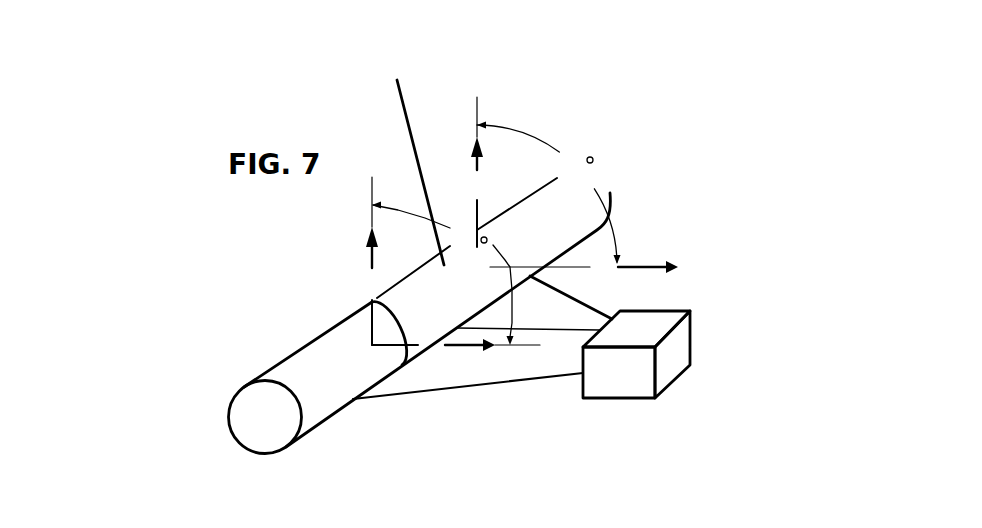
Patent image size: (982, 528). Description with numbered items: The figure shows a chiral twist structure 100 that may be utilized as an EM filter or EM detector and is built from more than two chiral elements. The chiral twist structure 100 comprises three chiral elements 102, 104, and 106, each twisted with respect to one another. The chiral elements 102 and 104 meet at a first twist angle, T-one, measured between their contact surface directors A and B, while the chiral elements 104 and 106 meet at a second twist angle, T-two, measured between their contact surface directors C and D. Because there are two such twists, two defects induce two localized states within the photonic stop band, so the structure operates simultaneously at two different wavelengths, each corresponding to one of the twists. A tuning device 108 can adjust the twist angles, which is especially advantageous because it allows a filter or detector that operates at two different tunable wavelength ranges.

The chiral twist structure 100 is at (213, 258).
The chiral element 102 is at (338, 408).
The chiral element 104 is at (394, 166).
The chiral element 106 is at (610, 193).
The tuning device 108 is at (672, 372).